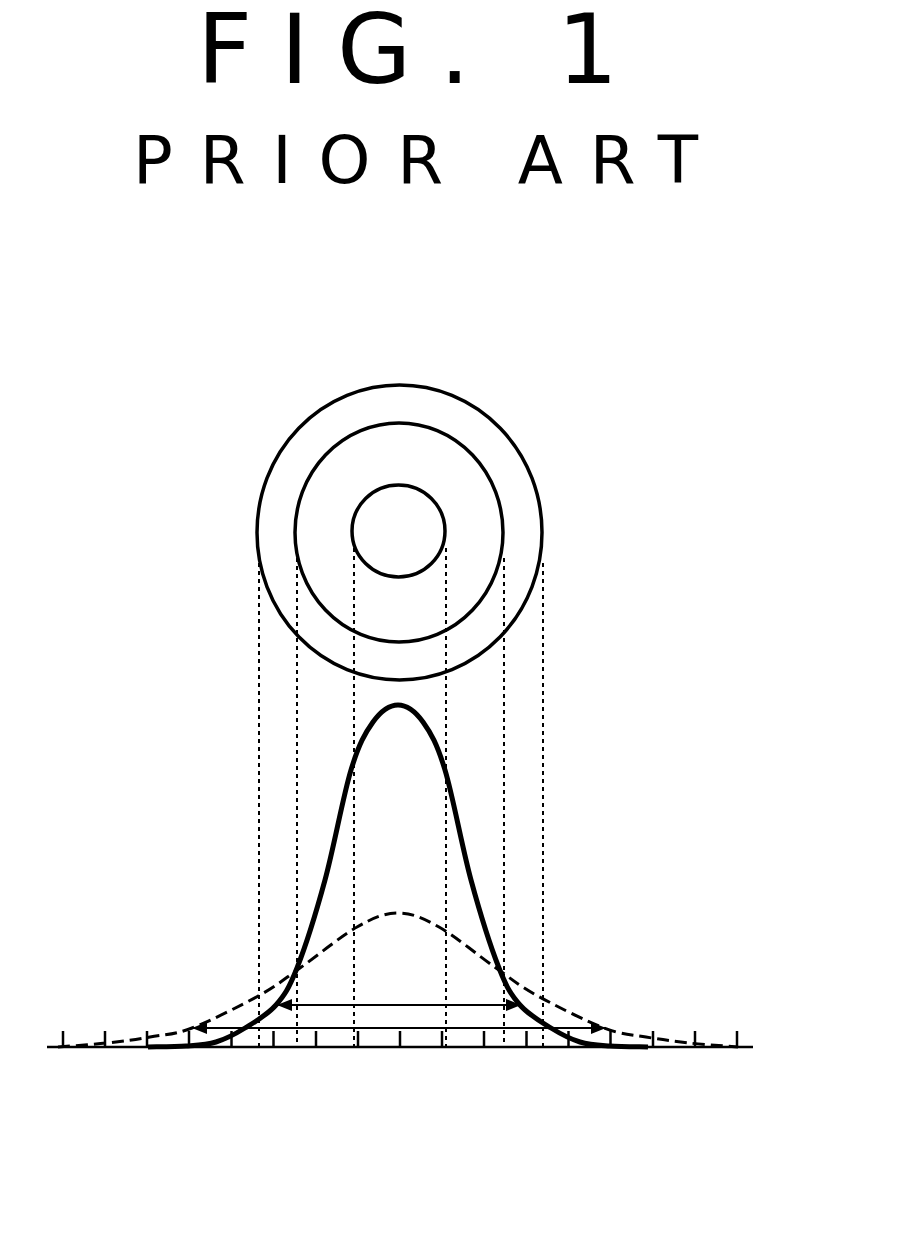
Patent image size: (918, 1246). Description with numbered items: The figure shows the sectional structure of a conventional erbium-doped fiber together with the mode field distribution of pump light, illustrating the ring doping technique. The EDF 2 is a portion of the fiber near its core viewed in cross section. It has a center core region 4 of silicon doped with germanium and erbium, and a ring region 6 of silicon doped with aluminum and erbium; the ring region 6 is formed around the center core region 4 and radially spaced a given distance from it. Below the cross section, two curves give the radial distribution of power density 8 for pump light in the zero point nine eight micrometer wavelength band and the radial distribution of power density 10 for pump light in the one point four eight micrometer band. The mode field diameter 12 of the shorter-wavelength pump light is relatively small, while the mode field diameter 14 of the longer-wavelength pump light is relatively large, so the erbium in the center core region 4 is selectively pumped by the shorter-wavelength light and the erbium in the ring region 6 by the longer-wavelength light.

The EDF 2 is at (420, 378).
The center core region 4 is at (435, 513).
The ring region 6 is at (528, 463).
The radial distribution of power density 8 is at (425, 742).
The radial distribution of power density 10 is at (560, 1006).
The mode field diameter 12 is at (402, 1003).
The mode field diameter 14 is at (333, 1032).